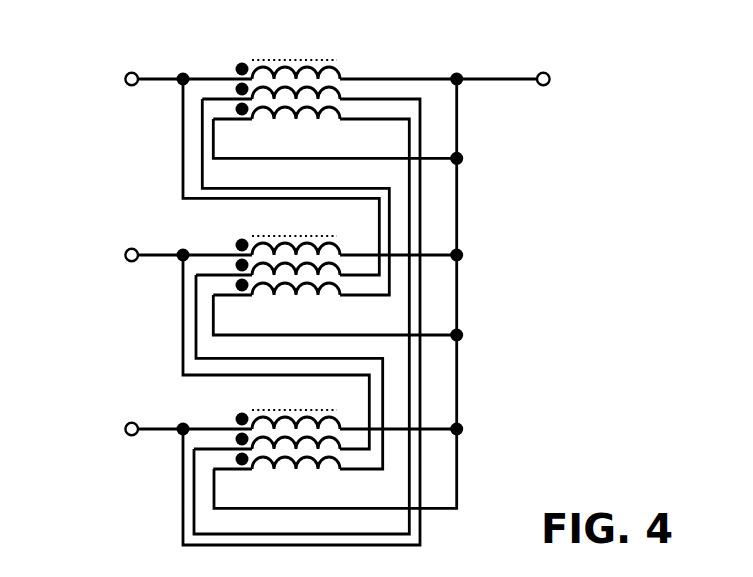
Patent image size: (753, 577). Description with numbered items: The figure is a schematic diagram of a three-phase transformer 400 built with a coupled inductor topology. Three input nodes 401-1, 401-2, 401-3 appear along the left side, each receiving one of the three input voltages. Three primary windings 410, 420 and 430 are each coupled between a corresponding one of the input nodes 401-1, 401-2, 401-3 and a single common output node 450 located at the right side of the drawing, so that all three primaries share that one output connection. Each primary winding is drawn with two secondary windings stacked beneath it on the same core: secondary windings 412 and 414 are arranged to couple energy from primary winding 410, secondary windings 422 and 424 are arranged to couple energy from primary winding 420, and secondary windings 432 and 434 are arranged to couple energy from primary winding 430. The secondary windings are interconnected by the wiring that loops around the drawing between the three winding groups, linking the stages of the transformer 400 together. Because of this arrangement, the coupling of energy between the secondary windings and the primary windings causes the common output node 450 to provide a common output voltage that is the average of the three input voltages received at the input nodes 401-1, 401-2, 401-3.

The three-phase transformer 400 is at (651, 406).
The input node 401-1 is at (124, 84).
The input node 401-2 is at (124, 260).
The input node 401-3 is at (124, 434).
The primary winding 410 is at (333, 81).
The secondary winding 412 is at (333, 101).
The secondary winding 414 is at (333, 121).
The primary winding 420 is at (333, 257).
The secondary winding 422 is at (333, 277).
The secondary winding 424 is at (333, 297).
The primary winding 430 is at (333, 431).
The secondary winding 432 is at (333, 451).
The secondary winding 434 is at (333, 471).
The common output node 450 is at (550, 80).